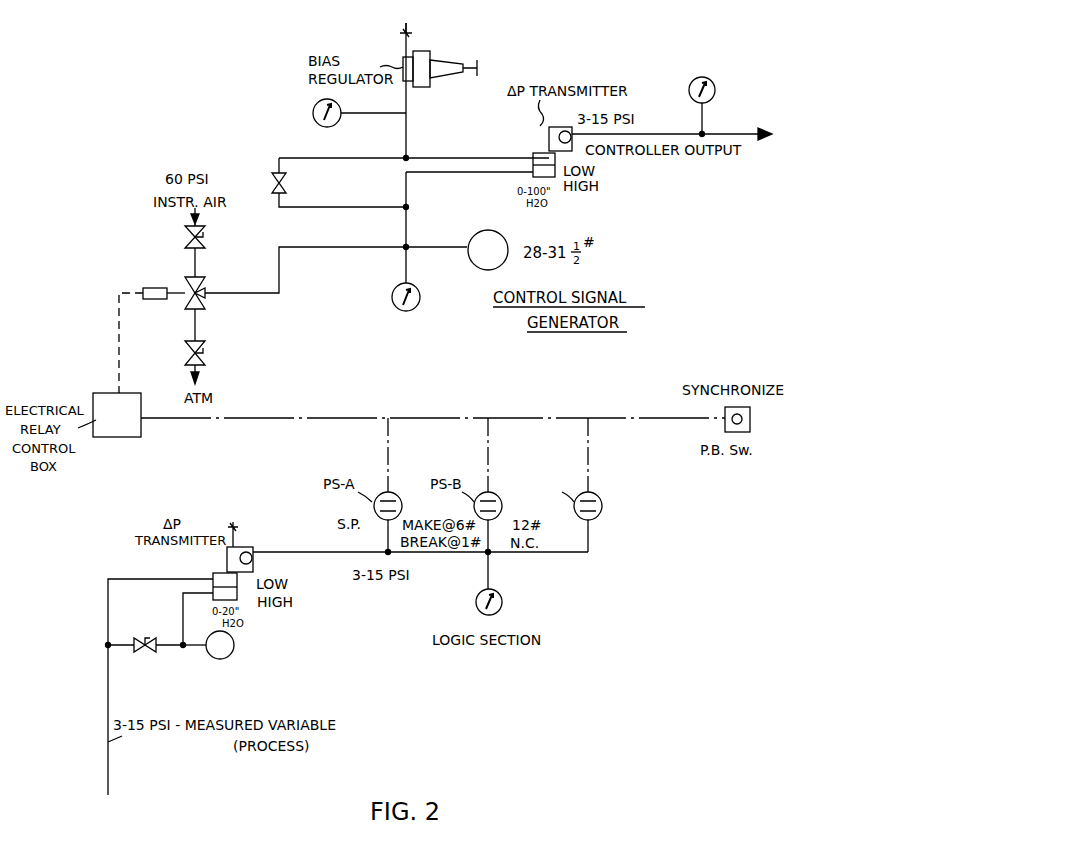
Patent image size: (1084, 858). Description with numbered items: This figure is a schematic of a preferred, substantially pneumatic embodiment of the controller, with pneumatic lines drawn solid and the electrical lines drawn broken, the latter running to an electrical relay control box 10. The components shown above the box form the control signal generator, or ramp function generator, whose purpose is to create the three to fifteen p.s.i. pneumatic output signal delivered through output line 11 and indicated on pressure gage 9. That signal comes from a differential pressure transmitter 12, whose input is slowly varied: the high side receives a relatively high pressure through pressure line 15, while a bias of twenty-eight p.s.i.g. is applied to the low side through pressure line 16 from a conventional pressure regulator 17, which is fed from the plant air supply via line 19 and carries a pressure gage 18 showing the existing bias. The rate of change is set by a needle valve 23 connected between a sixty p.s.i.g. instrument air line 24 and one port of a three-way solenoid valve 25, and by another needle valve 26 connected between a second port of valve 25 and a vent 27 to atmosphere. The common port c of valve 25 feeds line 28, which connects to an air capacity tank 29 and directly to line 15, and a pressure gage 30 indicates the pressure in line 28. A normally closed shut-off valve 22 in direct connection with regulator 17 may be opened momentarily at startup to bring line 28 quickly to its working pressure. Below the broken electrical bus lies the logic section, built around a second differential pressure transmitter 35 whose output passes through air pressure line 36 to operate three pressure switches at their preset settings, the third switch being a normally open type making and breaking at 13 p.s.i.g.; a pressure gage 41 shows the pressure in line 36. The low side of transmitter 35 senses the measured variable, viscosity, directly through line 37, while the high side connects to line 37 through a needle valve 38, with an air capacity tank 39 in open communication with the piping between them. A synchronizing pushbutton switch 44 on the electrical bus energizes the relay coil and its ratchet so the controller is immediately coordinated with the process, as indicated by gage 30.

The pressure gage 9 is at (715, 84).
The electrical relay control box 10 is at (130, 428).
The output line 11 is at (728, 130).
The differential pressure transmitter 12 is at (621, 180).
The pressure switch PS-C 13 is at (584, 485).
The pressure line 15 is at (458, 172).
The pressure line 16 is at (480, 156).
The pressure regulator 17 is at (442, 56).
The pressure gage 18 is at (313, 107).
The line 19 is at (406, 23).
The shut-off valve 22 is at (286, 185).
The needle valve 23 is at (185, 241).
The line 24 is at (197, 214).
The 3-way solenoid valve 25 is at (175, 311).
The needle valve 26 is at (185, 356).
The vent 27 is at (199, 376).
The line 28 is at (293, 249).
The air capacity tank 29 is at (499, 235).
The pressure gage 30 is at (416, 307).
The differential pressure transmitter 35 is at (304, 591).
The air pressure line 36 is at (304, 550).
The line 37 is at (108, 670).
The needle valve 38 is at (146, 630).
The air capacity tank 39 is at (232, 654).
The pressure gage 41 is at (502, 595).
The synchronizing pushbutton switch 44 is at (725, 426).